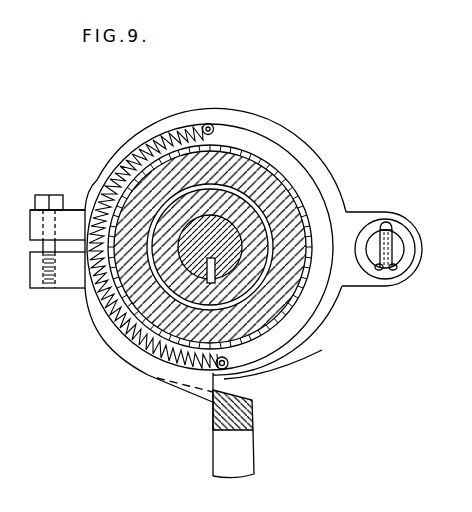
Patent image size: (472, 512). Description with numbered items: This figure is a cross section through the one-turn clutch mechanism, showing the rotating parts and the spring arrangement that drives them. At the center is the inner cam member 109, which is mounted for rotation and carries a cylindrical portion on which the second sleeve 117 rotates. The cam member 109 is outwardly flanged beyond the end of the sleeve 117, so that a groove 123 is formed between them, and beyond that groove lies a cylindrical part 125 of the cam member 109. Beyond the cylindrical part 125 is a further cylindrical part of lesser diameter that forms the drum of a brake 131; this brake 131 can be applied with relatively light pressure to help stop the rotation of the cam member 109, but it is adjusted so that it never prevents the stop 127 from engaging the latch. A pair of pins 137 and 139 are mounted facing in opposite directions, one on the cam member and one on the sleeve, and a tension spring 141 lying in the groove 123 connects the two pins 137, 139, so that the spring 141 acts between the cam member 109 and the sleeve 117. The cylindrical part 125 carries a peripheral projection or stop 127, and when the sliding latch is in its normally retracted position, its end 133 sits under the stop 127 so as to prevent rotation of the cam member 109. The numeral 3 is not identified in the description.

The brake 131 is at (246, 117).
The cylindrical part 125 is at (327, 294).
The inner cam member 109 is at (303, 212).
The groove 123 is at (306, 180).
The second sleeve 117 is at (157, 180).
The shaft 3 is at (300, 297).
The tension spring 141 is at (133, 148).
The pin 137 is at (208, 123).
The pin 139 is at (229, 369).
The stop 127 is at (185, 382).
The end of the latch 133 is at (254, 419).